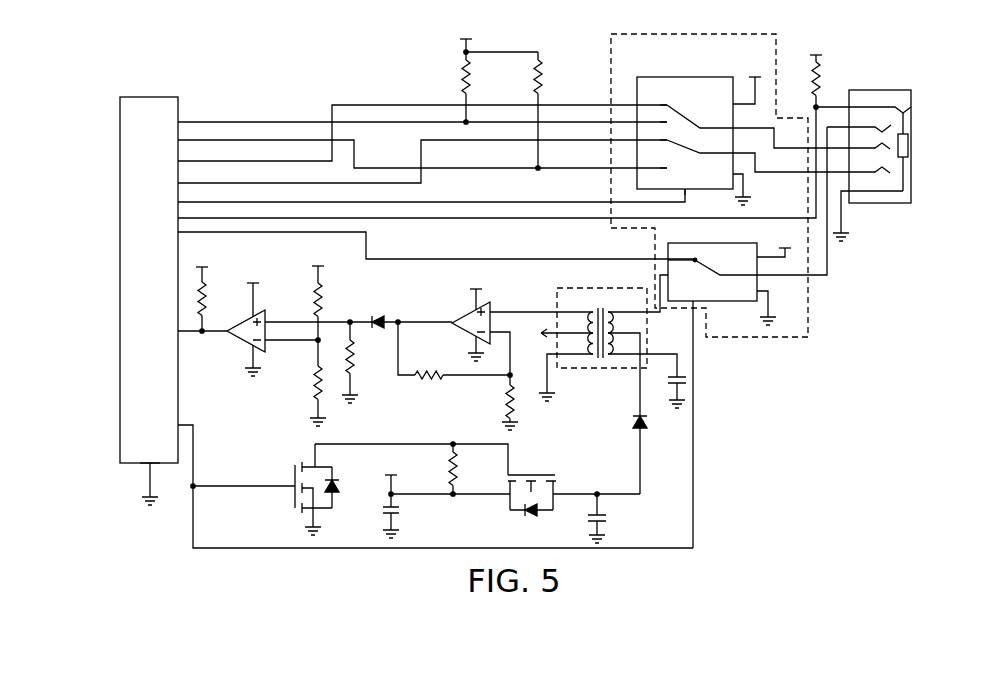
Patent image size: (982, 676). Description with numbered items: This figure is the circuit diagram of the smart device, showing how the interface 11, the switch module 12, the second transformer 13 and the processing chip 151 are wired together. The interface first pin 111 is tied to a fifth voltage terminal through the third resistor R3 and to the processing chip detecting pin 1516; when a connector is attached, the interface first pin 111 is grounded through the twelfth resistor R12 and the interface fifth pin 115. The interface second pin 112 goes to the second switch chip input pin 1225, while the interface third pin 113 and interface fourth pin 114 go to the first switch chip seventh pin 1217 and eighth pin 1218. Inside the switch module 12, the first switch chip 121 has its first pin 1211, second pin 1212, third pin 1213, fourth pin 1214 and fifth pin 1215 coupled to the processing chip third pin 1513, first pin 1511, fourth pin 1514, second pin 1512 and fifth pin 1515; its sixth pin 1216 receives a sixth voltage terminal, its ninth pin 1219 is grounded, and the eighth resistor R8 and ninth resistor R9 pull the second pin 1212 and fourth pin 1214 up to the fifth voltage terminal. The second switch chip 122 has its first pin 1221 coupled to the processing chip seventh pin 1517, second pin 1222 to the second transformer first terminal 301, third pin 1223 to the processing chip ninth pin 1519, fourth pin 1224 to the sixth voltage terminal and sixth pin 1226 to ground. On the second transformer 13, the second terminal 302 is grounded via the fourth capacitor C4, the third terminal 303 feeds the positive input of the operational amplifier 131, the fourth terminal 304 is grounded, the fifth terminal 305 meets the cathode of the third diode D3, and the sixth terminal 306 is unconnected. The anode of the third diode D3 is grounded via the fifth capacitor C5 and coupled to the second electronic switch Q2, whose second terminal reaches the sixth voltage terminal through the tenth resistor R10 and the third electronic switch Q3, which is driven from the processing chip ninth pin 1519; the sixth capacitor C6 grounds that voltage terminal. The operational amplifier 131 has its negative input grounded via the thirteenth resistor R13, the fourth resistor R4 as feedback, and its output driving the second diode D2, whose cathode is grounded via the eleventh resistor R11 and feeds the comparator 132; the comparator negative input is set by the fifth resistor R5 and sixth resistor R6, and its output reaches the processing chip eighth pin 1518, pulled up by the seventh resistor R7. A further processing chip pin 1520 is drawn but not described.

The processing chip 151 is at (149, 97).
The processing chip first pin 1511 is at (408, 122).
The processing chip second pin 1512 is at (408, 152).
The processing chip third pin 1513 is at (408, 136).
The processing chip fourth pin 1514 is at (408, 164).
The processing chip fifth pin 1515 is at (417, 198).
The processing chip detecting pin 1516 is at (483, 165).
The processing chip seventh pin 1517 is at (422, 243).
The processing chip eighth pin 1518 is at (188, 331).
The processing chip ninth pin 1519 is at (421, 484).
The pin of control unit 1520 is at (149, 456).
The switch module 12 is at (757, 337).
The first switch chip 121 is at (681, 77).
The first switch chip first pin 1211 is at (653, 99).
The first switch chip second pin 1212 is at (653, 116).
The first switch chip third pin 1213 is at (653, 134).
The first switch chip fourth pin 1214 is at (653, 161).
The first switch chip fifth pin 1215 is at (680, 186).
The first switch chip sixth pin 1216 is at (732, 83).
The first switch chip seventh pin 1217 is at (774, 133).
The first switch chip eighth pin 1218 is at (774, 156).
The first switch chip ninth pin 1219 is at (725, 186).
The second switch chip 122 is at (694, 243).
The second switch chip first pin 1221 is at (682, 253).
The second switch chip second pin 1222 is at (652, 291).
The second switch chip third pin 1223 is at (687, 418).
The second switch chip fourth pin 1224 is at (758, 246).
The second switch chip input pin 1225 is at (774, 201).
The second switch chip sixth pin 1226 is at (749, 305).
The interface 11 is at (866, 90).
The interface first pin 111 is at (863, 104).
The interface second pin 112 is at (859, 123).
The interface third pin 113 is at (869, 142).
The interface fourth pin 114 is at (869, 166).
The interface fifth pin 115 is at (868, 210).
The second transformer 13 is at (581, 368).
The second transformer first terminal 301 is at (620, 327).
The second transformer second terminal 302 is at (642, 360).
The second transformer third terminal 303 is at (541, 327).
The second transformer fourth terminal 304 is at (566, 372).
The second transformer fifth terminal 305 is at (624, 368).
The second transformer sixth terminal 306 is at (567, 329).
The operational amplifier 131 is at (464, 311).
The comparator 132 is at (240, 338).
The third resistor R3 is at (803, 72).
The fourth resistor R4 is at (454, 350).
The fifth resistor R5 is at (305, 295).
The sixth resistor R6 is at (305, 383).
The seventh resistor R7 is at (213, 290).
The eighth resistor R8 is at (487, 71).
The ninth resistor R9 is at (524, 110).
The tenth resistor R10 is at (411, 469).
The eleventh resistor R11 is at (367, 362).
The twelfth resistor R12 is at (908, 145).
The thirteenth resistor R13 is at (494, 402).
The fourth capacitor C4 is at (665, 392).
The fifth capacitor C5 is at (584, 518).
The sixth capacitor C6 is at (433, 497).
The second diode D2 is at (332, 310).
The third diode D3 is at (626, 454).
The second electronic switch Q2 is at (574, 486).
The third electronic switch Q3 is at (303, 489).